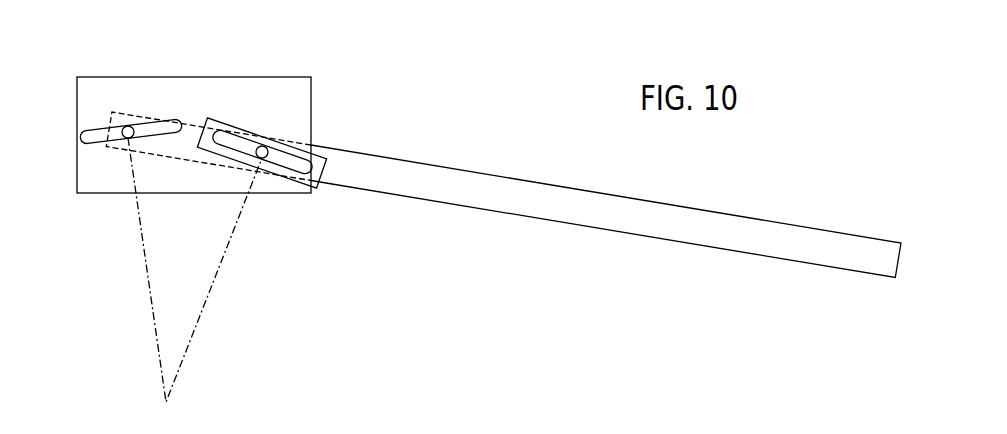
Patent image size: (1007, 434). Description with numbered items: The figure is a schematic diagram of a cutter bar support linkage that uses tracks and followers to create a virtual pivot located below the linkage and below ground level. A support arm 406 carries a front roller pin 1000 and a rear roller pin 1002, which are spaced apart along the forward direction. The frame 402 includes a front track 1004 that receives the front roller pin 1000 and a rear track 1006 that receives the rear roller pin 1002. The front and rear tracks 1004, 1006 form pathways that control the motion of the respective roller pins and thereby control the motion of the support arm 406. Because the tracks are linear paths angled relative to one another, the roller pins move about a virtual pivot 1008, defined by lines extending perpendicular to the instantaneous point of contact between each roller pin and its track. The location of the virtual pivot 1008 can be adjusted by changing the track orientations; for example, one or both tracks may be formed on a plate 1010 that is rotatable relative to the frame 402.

The frame 402 is at (292, 100).
The support arm 406 is at (510, 197).
The front roller pin 1000 is at (265, 146).
The rear roller pin 1002 is at (129, 126).
The front track 1004 is at (263, 160).
The rear track 1006 is at (93, 143).
The virtual pivot 1008 is at (168, 402).
The plate 1010 is at (316, 163).